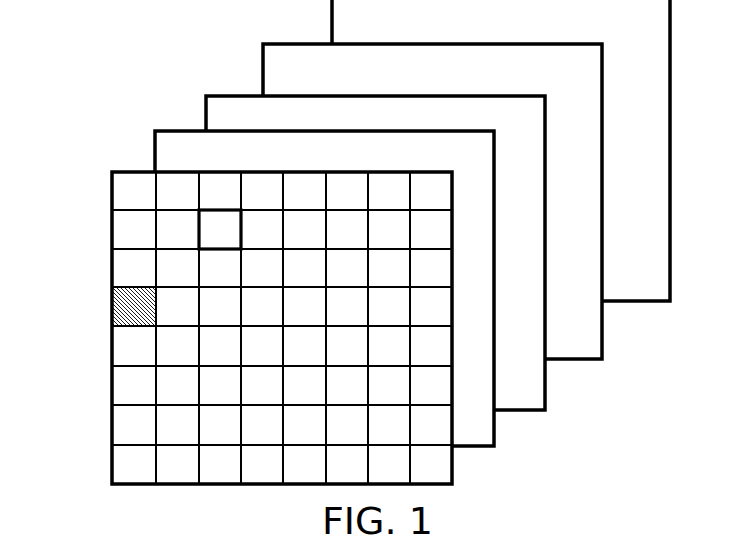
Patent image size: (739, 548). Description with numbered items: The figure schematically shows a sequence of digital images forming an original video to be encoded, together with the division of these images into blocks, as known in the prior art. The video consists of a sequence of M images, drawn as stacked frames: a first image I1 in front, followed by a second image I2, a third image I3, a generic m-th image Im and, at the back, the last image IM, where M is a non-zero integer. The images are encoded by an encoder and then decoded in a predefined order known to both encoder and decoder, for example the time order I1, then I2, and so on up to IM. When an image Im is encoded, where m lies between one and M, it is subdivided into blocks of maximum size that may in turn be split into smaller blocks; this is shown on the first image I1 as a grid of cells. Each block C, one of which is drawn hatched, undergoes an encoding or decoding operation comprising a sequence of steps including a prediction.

The first image I1 is at (112, 215).
The second image I2 is at (155, 150).
The third image I3 is at (206, 111).
The image being encoded Im is at (263, 72).
The last image IM is at (332, 12).
The block C is at (124, 304).